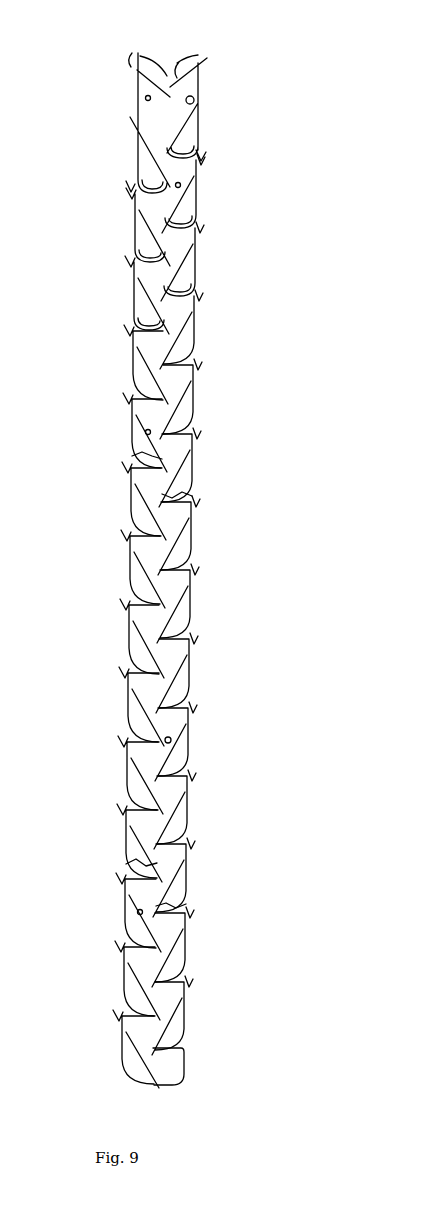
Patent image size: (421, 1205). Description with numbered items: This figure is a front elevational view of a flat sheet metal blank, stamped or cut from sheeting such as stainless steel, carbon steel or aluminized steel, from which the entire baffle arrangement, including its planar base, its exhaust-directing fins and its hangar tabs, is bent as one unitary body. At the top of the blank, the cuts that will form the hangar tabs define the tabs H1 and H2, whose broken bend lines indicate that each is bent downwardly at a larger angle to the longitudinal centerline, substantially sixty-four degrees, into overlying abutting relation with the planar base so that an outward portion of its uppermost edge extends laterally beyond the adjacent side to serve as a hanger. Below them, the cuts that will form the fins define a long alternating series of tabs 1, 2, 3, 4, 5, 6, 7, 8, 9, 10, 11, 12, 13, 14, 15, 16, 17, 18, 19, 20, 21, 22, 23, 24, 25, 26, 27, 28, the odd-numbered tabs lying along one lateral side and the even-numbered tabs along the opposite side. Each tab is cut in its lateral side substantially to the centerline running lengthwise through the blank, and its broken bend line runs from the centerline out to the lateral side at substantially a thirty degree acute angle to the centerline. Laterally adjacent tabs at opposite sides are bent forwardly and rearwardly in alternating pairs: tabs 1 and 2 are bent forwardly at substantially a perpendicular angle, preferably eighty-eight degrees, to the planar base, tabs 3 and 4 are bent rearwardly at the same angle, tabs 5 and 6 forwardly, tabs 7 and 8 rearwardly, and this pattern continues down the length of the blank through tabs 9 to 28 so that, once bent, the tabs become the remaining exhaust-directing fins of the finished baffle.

The hangar tab blank tab H1 is at (211, 95).
The hangar tab blank tab H2 is at (118, 111).
The tab 1 is at (211, 108).
The tab 2 is at (123, 123).
The tab 3 is at (208, 193).
The tab 4 is at (123, 227).
The tab 5 is at (207, 261).
The tab 6 is at (122, 295).
The tab 7 is at (205, 329).
The tab 8 is at (121, 364).
The tab 9 is at (205, 399).
The tab 10 is at (119, 432).
The tab 11 is at (208, 467).
The tab 12 is at (118, 501).
The tab 13 is at (207, 535).
The tab 14 is at (117, 569).
The tab 15 is at (206, 603).
The tab 16 is at (116, 638).
The tab 17 is at (205, 673).
The tab 18 is at (116, 706).
The tab 19 is at (204, 741).
The tab 20 is at (115, 775).
The tab 21 is at (203, 809).
The tab 22 is at (114, 843).
The tab 23 is at (202, 877).
The tab 24 is at (112, 912).
The tab 25 is at (201, 947).
The tab 26 is at (111, 980).
The tab 27 is at (200, 1015).
The tab 28 is at (123, 1049).